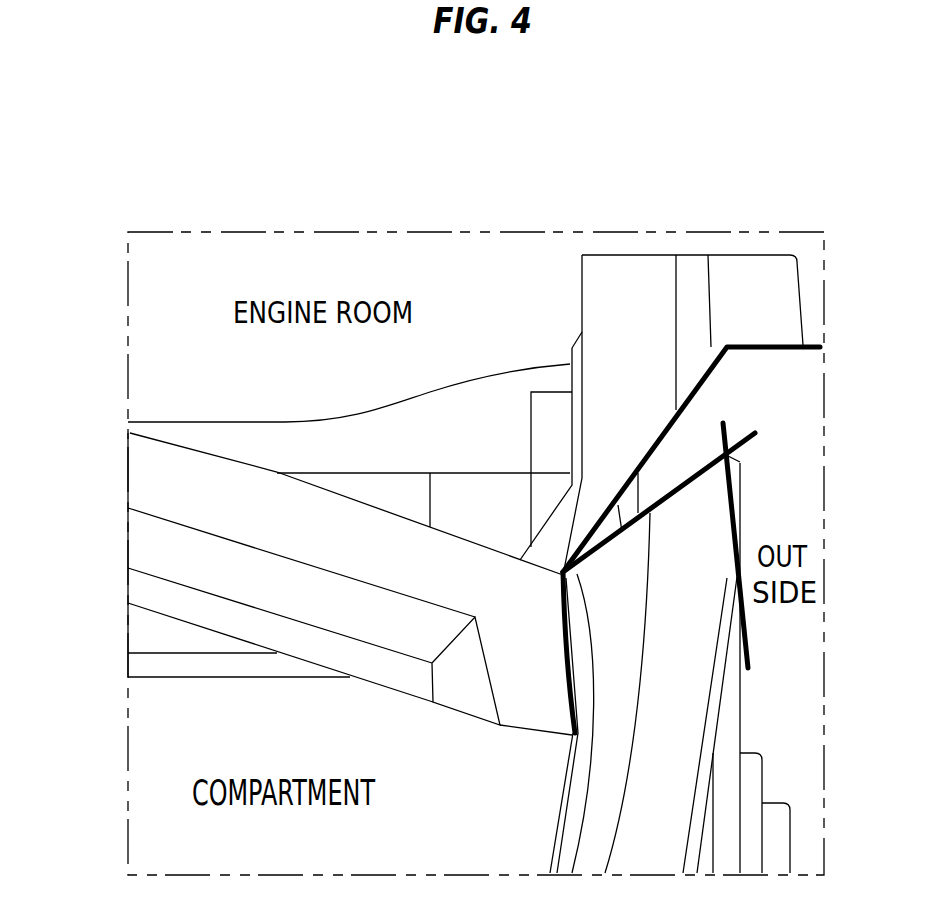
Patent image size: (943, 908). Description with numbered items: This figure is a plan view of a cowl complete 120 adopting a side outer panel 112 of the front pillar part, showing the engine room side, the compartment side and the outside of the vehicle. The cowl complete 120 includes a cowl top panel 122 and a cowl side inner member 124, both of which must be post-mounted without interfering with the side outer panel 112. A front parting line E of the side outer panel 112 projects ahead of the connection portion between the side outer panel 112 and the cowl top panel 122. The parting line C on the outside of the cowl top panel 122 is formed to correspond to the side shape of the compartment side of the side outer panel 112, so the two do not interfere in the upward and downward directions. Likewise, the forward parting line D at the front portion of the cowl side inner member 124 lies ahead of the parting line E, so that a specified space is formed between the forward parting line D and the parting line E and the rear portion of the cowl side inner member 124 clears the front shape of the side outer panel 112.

The side outer panel 112 is at (690, 705).
The cowl complete 120 is at (150, 482).
The cowl top panel 122 is at (238, 573).
The cowl side inner member 124 is at (752, 277).
The parting line of the outside of the cowl top panel C is at (572, 682).
The forward parting line of the cowl side inner member D is at (717, 373).
The front parting line of the side outer panel E is at (683, 490).